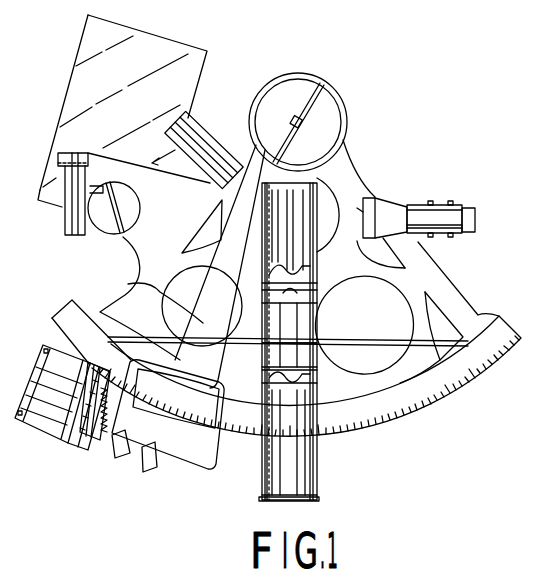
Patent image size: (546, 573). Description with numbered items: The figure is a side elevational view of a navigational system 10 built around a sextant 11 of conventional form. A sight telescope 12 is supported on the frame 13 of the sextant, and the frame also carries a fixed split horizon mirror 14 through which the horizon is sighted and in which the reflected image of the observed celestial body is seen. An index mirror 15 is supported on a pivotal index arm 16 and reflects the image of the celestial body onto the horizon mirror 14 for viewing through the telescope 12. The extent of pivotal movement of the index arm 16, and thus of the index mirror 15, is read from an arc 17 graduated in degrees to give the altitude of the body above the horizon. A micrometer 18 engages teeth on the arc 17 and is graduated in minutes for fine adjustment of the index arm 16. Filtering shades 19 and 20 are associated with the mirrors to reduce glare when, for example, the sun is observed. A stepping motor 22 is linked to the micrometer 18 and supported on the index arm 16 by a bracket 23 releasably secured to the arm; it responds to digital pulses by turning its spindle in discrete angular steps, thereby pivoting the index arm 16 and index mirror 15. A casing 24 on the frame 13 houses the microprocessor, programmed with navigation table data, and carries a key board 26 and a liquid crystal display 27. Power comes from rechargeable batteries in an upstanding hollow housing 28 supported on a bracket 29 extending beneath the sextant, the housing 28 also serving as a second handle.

The navigational system 10 is at (157, 497).
The sextant 11 is at (382, 144).
The sight telescope 12 is at (421, 203).
The frame 13 is at (440, 282).
The fixed split horizon mirror 14 is at (108, 238).
The index mirror 15 is at (314, 97).
The index arm 16 is at (128, 284).
The arc 17 is at (309, 386).
The micrometer 18 is at (93, 430).
The filtering shade 19 is at (236, 150).
The filtering shade 20 is at (63, 206).
The stepping motor 22 is at (55, 420).
The bracket 23 is at (40, 430).
The casing 24 is at (203, 72).
The key board 26 is at (446, 563).
The liquid crystal display 27 is at (315, 290).
The battery housing 28 is at (303, 460).
The bracket 29 is at (262, 503).